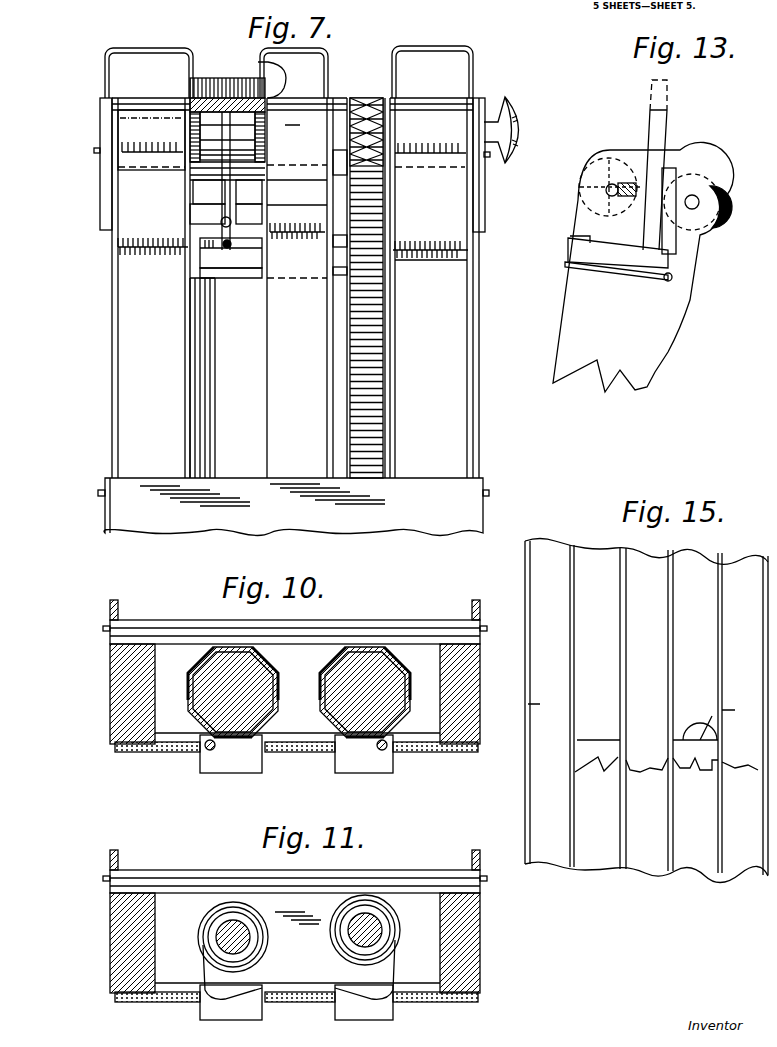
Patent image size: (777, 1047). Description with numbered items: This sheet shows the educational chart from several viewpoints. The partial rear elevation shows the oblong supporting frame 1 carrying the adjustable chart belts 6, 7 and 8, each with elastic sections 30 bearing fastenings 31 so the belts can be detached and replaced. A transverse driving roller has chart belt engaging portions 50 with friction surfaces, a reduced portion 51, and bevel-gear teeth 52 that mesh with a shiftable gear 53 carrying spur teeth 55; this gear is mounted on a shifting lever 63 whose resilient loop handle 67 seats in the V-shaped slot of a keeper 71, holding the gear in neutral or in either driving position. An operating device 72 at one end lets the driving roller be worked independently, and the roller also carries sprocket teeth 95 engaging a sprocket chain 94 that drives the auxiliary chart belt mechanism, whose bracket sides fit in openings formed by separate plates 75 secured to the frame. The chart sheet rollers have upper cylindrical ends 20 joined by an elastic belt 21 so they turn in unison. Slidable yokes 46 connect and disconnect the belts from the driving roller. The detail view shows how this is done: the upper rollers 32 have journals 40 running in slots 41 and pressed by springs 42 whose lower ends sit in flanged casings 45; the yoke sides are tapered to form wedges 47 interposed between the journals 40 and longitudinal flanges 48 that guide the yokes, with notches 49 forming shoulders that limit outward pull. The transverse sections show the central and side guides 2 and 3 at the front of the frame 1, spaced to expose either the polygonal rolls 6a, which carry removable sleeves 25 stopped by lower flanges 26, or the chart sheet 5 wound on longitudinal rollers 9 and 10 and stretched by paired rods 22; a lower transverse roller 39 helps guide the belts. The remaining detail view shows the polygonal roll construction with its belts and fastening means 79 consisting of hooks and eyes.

In FIG. 7, the slidable yoke 46 is at (140, 50).
In FIG. 13, the slidable yoke 46 is at (654, 134).
In FIG. 7, the spur teeth 55 is at (206, 80).
In FIG. 7, the gear wheel 53 is at (259, 74).
In FIG. 7, the reduced portion 51 is at (227, 146).
In FIG. 7, the sprocket teeth 95 is at (367, 100).
In FIG. 7, the chart belt engaging portions 50 is at (137, 125).
In FIG. 7, the fastenings 31 is at (125, 157).
In FIG. 7, the elastic sections 30 is at (132, 172).
In FIG. 7, the springs 42 is at (100, 195).
In FIG. 7, the bevel-gear teeth 52 is at (193, 164).
In FIG. 7, the shifting lever 63 is at (228, 190).
In FIG. 7, the keeper 71 is at (202, 200).
In FIG. 7, the handle 67 is at (224, 246).
In FIG. 7, the elastic belt 21 is at (262, 258).
In FIG. 7, the upper cylindrical ends 20 is at (328, 270).
In FIG. 7, the sprocket chain 94 is at (372, 366).
In FIG. 7, the plates 75 is at (106, 500).
In FIG. 7, the operating device 72 is at (531, 128).
In FIG. 7, the chart belt 8 is at (151, 288).
In FIG. 15, the chart belt 8 is at (742, 673).
In FIG. 11, the chart belt 8 is at (440, 995).
In FIG. 7, the chart belt 7 is at (307, 288).
In FIG. 15, the chart belt 7 is at (552, 673).
In FIG. 11, the chart belt 7 is at (158, 1002).
In FIG. 7, the chart belt 6 is at (434, 288).
In FIG. 15, the chart belt 6 is at (648, 673).
In FIG. 11, the chart belt 6 is at (300, 1002).
In FIG. 13, the slots 41 is at (620, 180).
In FIG. 13, the longitudinal flanges 48 is at (675, 170).
In FIG. 13, the upper rollers 32 is at (592, 188).
In FIG. 13, the journals 40 is at (617, 200).
In FIG. 13, the flanged casings 45 is at (700, 204).
In FIG. 13, the notches 49 is at (625, 240).
In FIG. 13, the wedges 47 is at (664, 282).
In FIG. 15, the side longitudinal guides 3 is at (639, 712).
In FIG. 10, the side longitudinal guides 3 is at (195, 755).
In FIG. 11, the side longitudinal guides 3 is at (196, 1002).
In FIG. 15, the central longitudinal guide 2 is at (624, 726).
In FIG. 10, the central longitudinal guide 2 is at (332, 758).
In FIG. 11, the central longitudinal guide 2 is at (328, 1002).
In FIG. 10, the flanges 26 is at (196, 665).
In FIG. 10, the sleeves 25 is at (218, 650).
In FIG. 10, the lower transverse roller 39 is at (372, 626).
In FIG. 11, the lower transverse roller 39 is at (384, 880).
In FIG. 10, the fastening means 79 is at (298, 704).
In FIG. 10, the polygonal rolls 6a is at (328, 693).
In FIG. 10, the supporting frame 1 is at (455, 700).
In FIG. 10, the rollers or rods 22 is at (210, 752).
In FIG. 11, the rollers or rods 22 is at (215, 985).
In FIG. 11, the roller 9 is at (228, 930).
In FIG. 11, the roller 10 is at (400, 930).
In FIG. 11, the chart sheet 5 is at (250, 985).